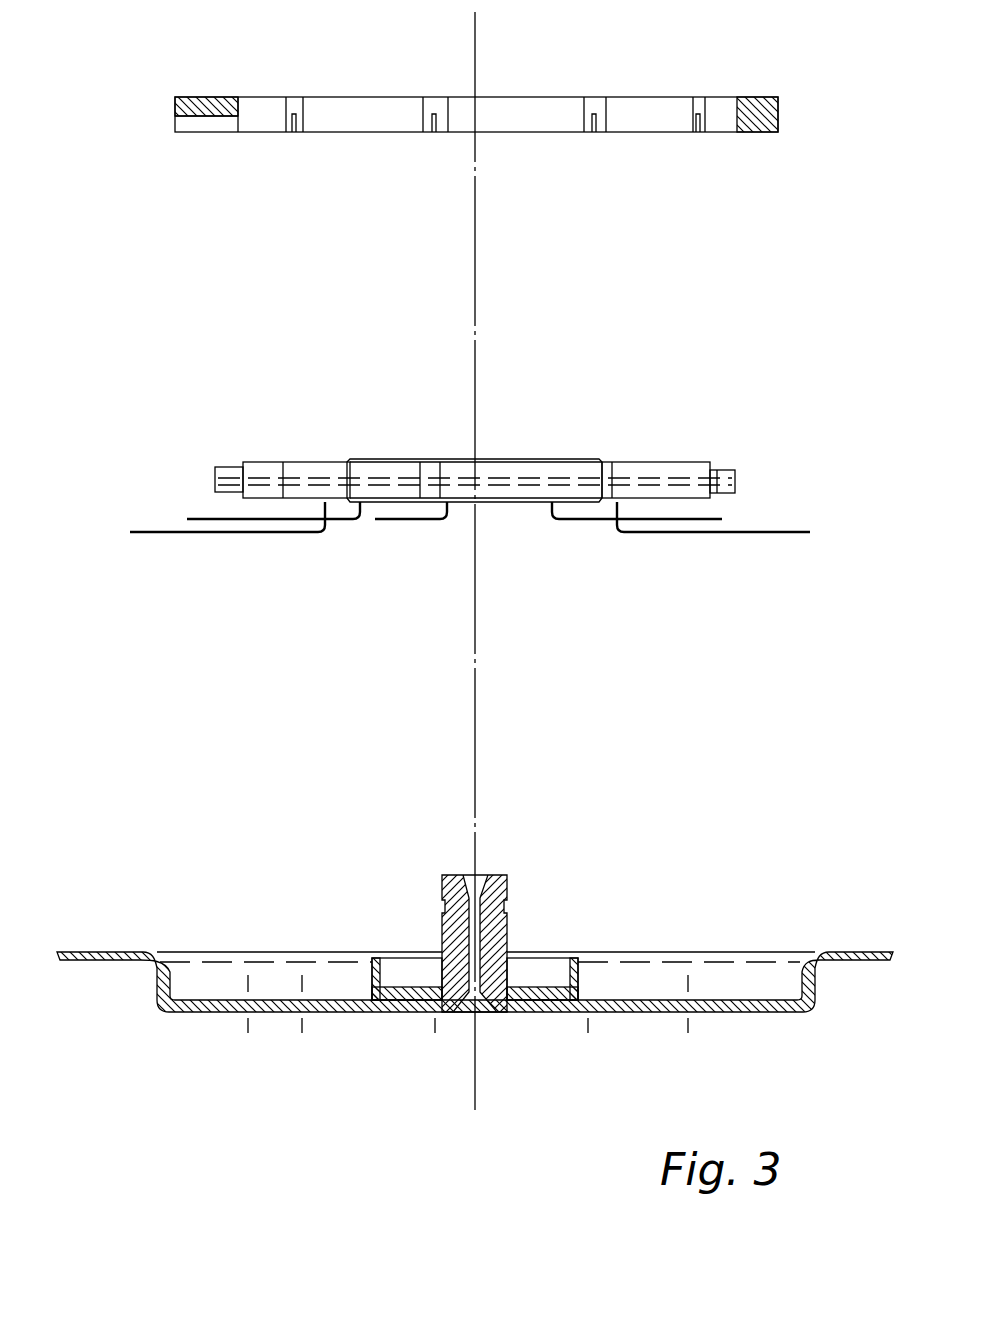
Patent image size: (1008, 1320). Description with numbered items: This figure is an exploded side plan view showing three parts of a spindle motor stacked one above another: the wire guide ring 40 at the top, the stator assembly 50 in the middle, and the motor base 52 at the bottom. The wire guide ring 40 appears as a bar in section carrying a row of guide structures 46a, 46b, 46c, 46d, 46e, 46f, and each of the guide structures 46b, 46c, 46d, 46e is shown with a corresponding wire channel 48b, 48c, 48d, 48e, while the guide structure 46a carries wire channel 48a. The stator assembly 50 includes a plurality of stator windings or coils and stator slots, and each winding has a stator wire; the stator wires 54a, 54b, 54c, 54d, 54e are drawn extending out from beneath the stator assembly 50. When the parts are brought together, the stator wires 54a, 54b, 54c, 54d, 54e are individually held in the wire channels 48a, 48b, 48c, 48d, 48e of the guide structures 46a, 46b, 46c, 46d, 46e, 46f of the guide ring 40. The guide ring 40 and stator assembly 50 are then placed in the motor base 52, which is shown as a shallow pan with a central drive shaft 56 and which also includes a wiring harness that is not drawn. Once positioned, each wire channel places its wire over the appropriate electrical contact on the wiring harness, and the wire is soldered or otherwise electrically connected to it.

The wire guide ring 40 is at (499, 116).
The guide structure 46a is at (192, 97).
The guide structure 46b is at (293, 97).
The guide structure 46c is at (432, 97).
The guide structure 46d is at (589, 97).
The guide structure 46e is at (699, 97).
The guide structure 46f is at (778, 118).
The wire channel 48a is at (182, 132).
The wire channel 48b is at (293, 132).
The wire channel 48c is at (432, 132).
The wire channel 48d is at (594, 132).
The wire channel 48e is at (698, 132).
The stator assembly 50 is at (756, 426).
The motor base 52 is at (128, 952).
The stator wire 54a is at (143, 532).
The stator wire 54b is at (235, 519).
The stator wire 54c is at (400, 519).
The stator wire 54d is at (565, 519).
The stator wire 54e is at (733, 532).
The drive shaft 56 is at (507, 897).